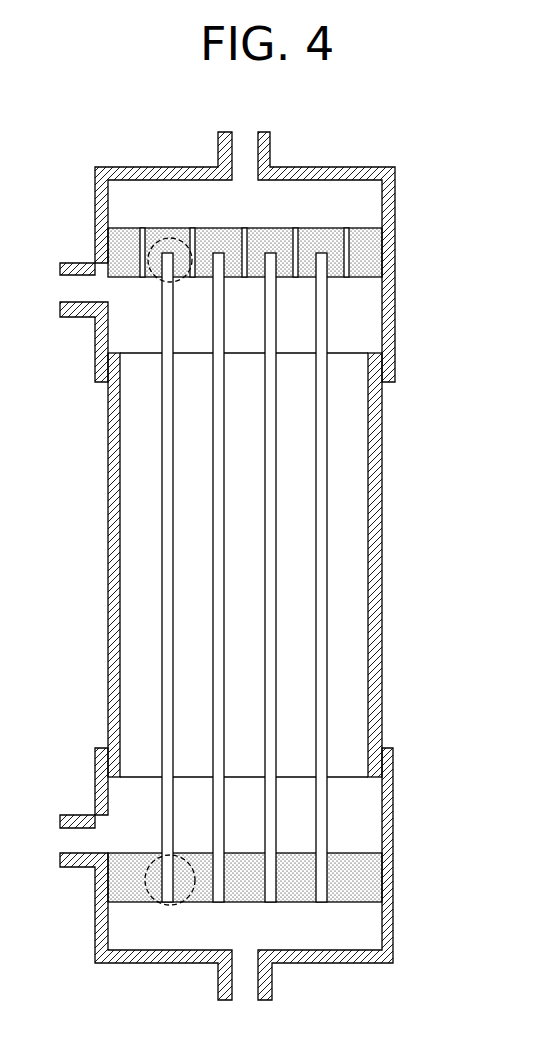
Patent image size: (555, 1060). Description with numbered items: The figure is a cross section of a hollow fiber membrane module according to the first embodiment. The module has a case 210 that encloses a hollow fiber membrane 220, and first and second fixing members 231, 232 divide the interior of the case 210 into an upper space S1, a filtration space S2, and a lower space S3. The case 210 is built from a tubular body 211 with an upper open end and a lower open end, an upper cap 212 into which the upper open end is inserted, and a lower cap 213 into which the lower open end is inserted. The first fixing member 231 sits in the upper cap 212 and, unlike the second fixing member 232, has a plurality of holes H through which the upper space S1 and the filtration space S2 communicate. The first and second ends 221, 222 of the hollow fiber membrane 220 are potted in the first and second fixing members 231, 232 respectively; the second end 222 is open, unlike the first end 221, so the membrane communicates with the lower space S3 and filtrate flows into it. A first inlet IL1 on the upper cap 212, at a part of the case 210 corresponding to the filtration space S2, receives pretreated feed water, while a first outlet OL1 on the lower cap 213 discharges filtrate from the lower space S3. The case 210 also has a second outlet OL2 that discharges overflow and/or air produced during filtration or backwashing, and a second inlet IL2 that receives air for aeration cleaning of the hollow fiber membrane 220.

The case 210 is at (292, 566).
The tubular body 211 is at (380, 561).
The upper cap 212 is at (393, 343).
The lower cap 213 is at (262, 820).
The hollow fiber membrane 220 is at (167, 596).
The first end 221 is at (178, 248).
The second end 222 is at (138, 877).
The first fixing member 231 is at (330, 240).
The second fixing member 232 is at (355, 873).
The hole H is at (143, 226).
The upper space S1 is at (332, 194).
The filtration space S2 is at (145, 668).
The lower space S3 is at (347, 926).
The first inlet IL1 is at (72, 262).
The second inlet IL2 is at (72, 814).
The first outlet OL1 is at (272, 975).
The second outlet OL2 is at (272, 150).